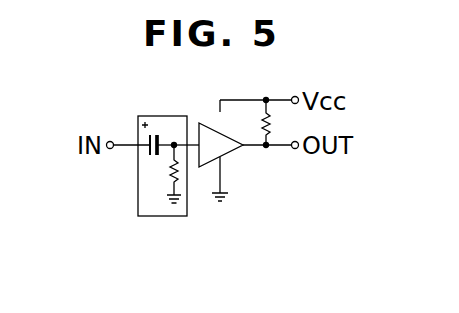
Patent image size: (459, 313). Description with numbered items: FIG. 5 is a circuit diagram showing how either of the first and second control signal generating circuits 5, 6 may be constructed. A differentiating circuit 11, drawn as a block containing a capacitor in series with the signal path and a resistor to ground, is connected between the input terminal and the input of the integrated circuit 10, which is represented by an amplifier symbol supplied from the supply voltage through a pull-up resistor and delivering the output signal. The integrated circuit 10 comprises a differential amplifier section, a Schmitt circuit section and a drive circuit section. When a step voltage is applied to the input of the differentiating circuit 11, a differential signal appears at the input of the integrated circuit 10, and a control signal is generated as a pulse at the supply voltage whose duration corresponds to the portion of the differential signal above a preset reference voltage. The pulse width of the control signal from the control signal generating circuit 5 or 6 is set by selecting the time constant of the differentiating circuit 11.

The first control signal generating circuit 5 is at (172, 102).
The second control signal generating circuit 6 is at (153, 145).
The integrated circuit 10 is at (223, 157).
The differentiating circuit 11 is at (138, 198).